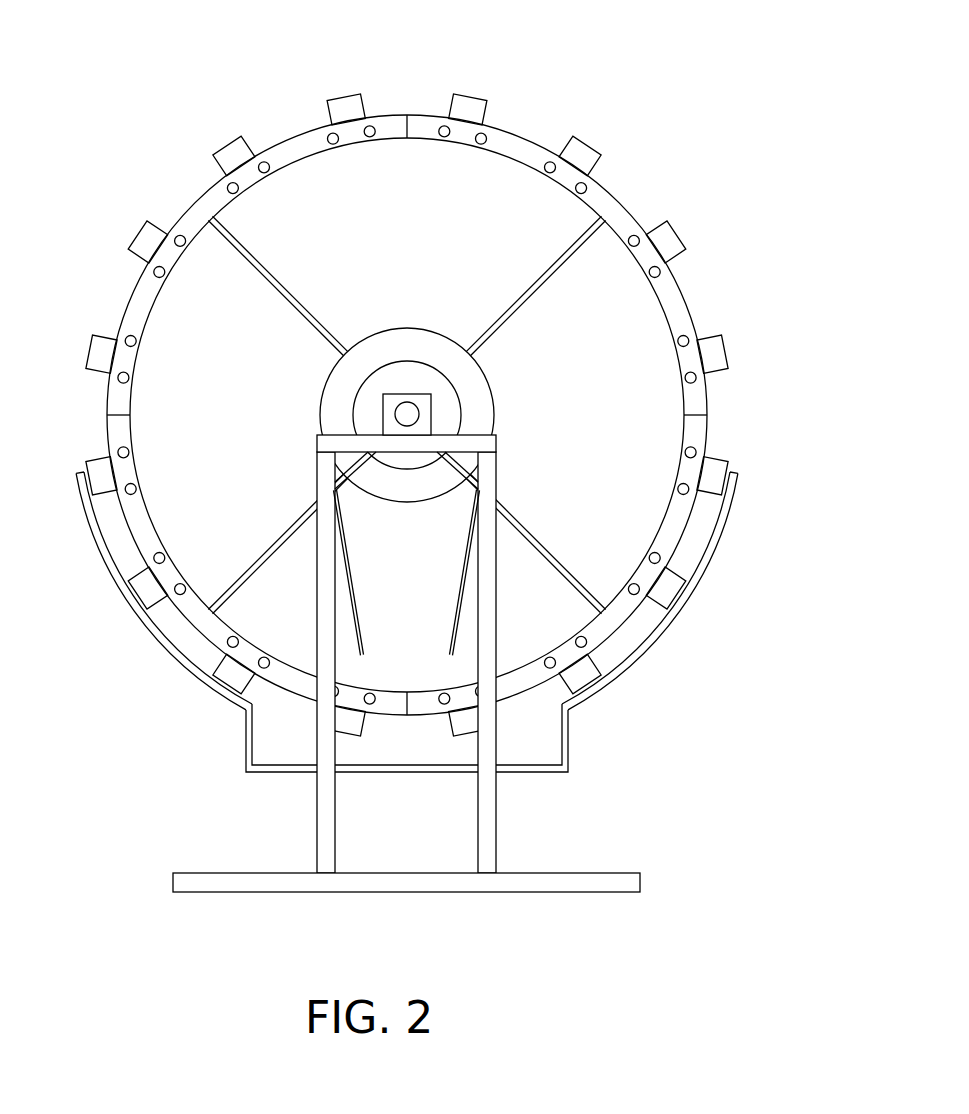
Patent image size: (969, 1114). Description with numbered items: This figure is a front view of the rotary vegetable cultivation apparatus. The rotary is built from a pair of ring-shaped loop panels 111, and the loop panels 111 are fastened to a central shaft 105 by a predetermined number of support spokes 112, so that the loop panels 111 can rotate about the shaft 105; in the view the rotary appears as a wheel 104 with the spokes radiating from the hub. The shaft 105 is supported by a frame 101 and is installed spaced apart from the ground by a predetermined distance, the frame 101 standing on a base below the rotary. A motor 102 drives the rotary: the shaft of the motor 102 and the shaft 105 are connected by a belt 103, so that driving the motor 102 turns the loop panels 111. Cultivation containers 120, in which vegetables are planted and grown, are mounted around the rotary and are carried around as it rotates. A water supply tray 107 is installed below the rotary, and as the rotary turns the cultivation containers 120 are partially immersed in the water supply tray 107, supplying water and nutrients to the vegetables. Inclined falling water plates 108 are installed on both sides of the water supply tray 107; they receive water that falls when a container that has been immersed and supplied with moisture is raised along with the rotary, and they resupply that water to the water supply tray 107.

The frame 101 is at (317, 822).
The motor 102 is at (458, 393).
The belt 103 is at (335, 572).
The wheel 104 is at (320, 388).
The shaft 105 is at (383, 414).
The water supply tray 107 is at (572, 752).
The falling water plate 108 is at (662, 638).
The loop panel 111 is at (200, 205).
The support spoke 112 is at (497, 512).
The cultivation container 120 is at (588, 142).